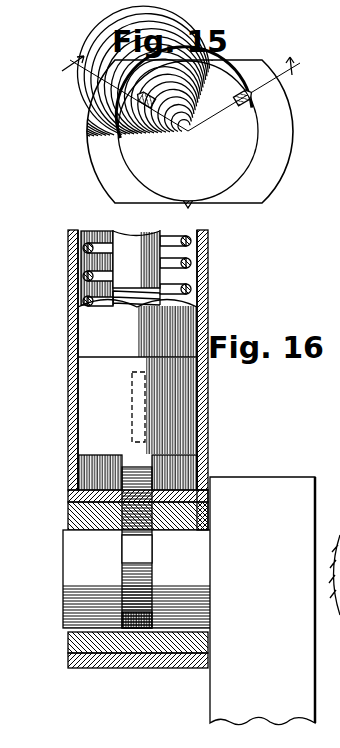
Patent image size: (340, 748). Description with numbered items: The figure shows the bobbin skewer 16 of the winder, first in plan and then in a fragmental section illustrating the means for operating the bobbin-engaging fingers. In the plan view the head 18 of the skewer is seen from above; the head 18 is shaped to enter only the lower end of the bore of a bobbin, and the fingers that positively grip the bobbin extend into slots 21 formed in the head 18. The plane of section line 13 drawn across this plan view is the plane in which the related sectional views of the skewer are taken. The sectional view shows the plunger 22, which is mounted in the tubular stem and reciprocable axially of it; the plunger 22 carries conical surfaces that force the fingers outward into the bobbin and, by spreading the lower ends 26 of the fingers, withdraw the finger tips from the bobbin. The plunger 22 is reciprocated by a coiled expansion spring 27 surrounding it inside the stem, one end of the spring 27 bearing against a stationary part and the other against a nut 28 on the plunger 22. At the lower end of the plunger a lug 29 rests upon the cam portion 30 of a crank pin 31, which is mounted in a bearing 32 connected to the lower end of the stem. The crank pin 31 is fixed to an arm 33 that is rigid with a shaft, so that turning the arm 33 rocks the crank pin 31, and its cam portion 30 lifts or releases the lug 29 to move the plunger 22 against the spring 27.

In FIG. 15, the section line 13— 13 is at (186, 93).
In FIG. 15, the bobbin skewer 16 is at (152, 104).
In FIG. 15, the head 18 is at (205, 80).
In FIG. 15, the slots 21 is at (148, 101).
In FIG. 15, the lower ends of the fingers 26 is at (339, 44).
In FIG. 16, the plunger 22 is at (126, 237).
In FIG. 16, the coiled expansion spring 27 is at (207, 262).
In FIG. 16, the nut 28 is at (88, 322).
In FIG. 16, the lug 29 is at (207, 503).
In FIG. 16, the cam portion 30 is at (145, 560).
In FIG. 16, the crank pin 31 is at (70, 556).
In FIG. 16, the bearing 32 is at (76, 513).
In FIG. 16, the arm 33 is at (246, 478).